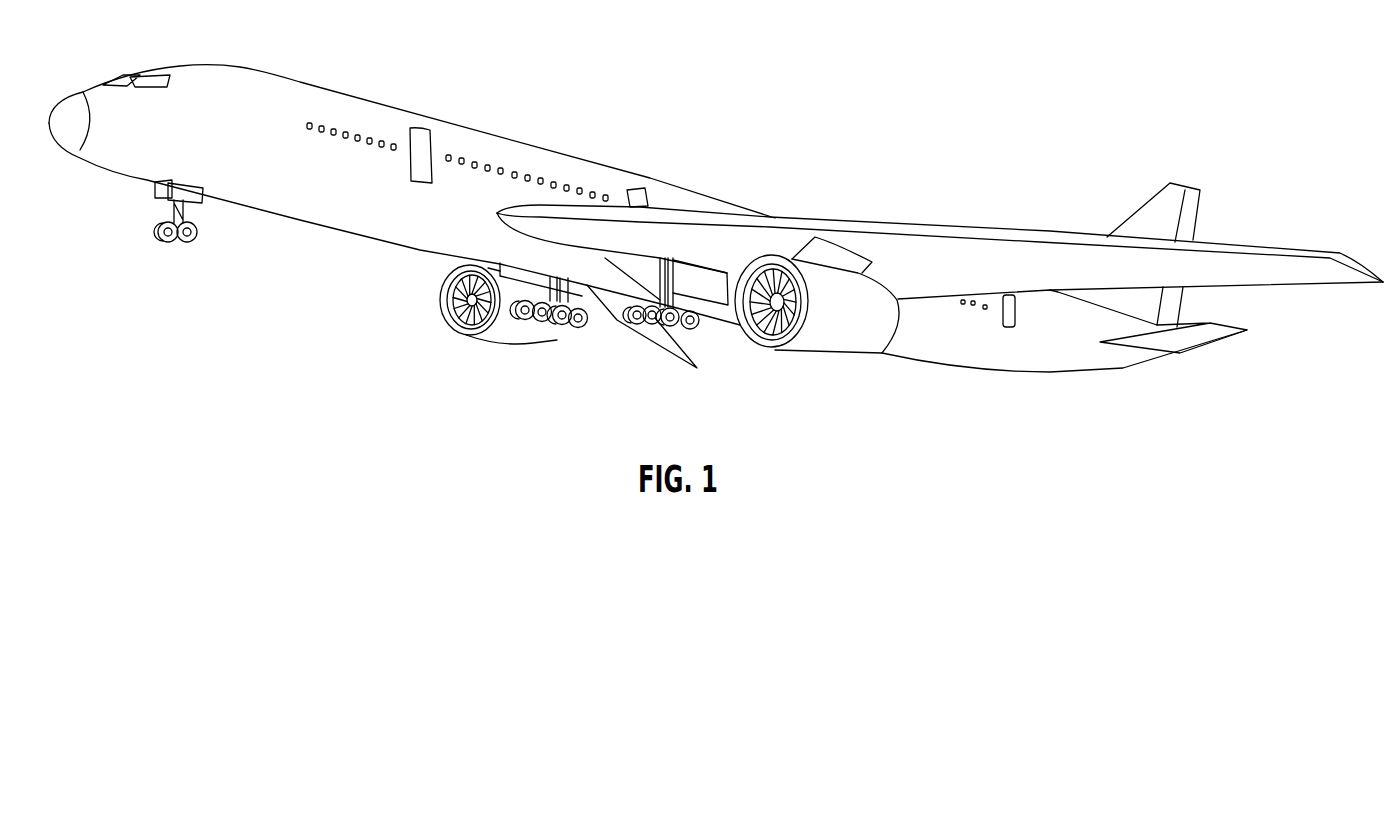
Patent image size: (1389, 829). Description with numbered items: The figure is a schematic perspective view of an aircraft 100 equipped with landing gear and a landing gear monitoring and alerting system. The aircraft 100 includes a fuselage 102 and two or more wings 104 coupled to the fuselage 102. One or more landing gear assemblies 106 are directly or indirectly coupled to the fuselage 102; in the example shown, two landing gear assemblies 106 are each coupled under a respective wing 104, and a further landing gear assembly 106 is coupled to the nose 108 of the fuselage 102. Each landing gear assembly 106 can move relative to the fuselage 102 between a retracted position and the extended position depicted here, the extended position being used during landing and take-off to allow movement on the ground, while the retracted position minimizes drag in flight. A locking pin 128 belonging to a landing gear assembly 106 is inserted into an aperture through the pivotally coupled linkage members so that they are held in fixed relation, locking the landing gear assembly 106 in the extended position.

The aircraft 100 is at (849, 87).
The fuselage 102 is at (236, 68).
The wings 104 is at (918, 223).
The landing gear assemblies 106 is at (160, 229).
The nose 108 is at (92, 167).
The locking pin 128 is at (607, 280).